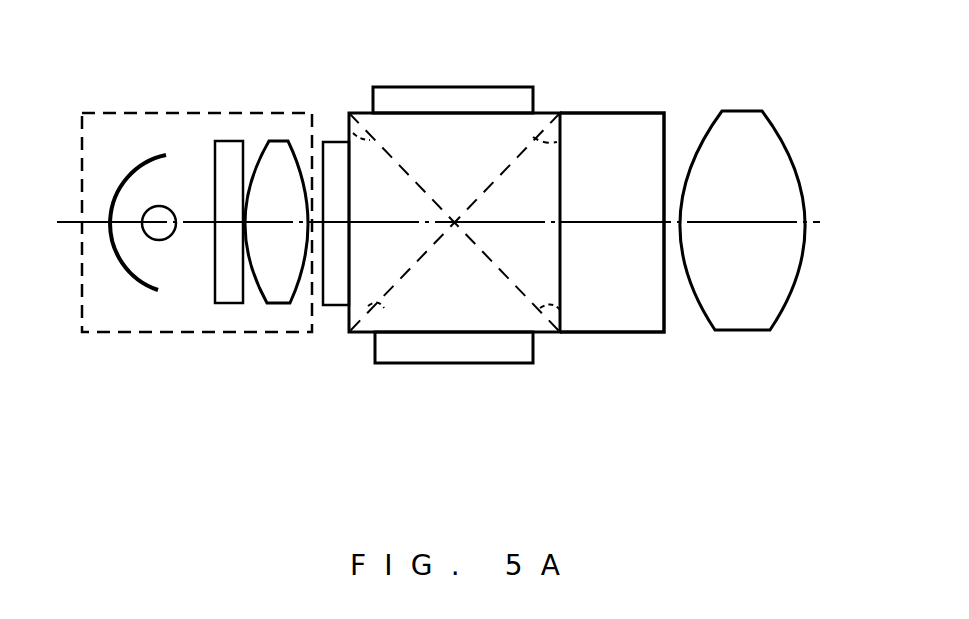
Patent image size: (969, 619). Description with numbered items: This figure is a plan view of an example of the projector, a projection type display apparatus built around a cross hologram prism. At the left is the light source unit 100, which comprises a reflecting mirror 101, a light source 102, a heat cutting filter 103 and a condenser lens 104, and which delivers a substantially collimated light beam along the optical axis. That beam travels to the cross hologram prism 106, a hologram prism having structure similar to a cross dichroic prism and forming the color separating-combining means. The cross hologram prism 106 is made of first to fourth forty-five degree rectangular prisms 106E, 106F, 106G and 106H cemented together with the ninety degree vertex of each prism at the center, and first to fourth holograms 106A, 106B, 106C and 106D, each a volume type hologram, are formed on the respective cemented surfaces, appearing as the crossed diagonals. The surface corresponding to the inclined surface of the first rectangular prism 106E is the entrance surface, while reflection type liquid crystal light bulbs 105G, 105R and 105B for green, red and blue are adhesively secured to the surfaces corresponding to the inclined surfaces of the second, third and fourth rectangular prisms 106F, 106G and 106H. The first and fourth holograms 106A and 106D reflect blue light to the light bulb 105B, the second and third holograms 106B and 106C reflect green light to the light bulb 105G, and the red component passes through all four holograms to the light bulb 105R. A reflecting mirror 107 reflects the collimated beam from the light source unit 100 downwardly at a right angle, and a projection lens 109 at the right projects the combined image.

The light source unit 100 is at (113, 110).
The reflecting mirror 101 is at (142, 285).
The light source 102 is at (157, 205).
The heat cutting filter 103 is at (230, 303).
The condenser lens 104 is at (277, 160).
The second reflection type liquid crystal light bulb 105R is at (337, 288).
The first reflection type liquid crystal light bulb 105G is at (413, 97).
The third reflection type liquid crystal light bulb 105B is at (503, 350).
The cross hologram prism 106 is at (559, 107).
The first hologram 106A is at (566, 138).
The second hologram 106B is at (357, 137).
The third hologram 106C is at (547, 308).
The fourth hologram 106D is at (372, 303).
The first 45° rectangular prism 106E is at (552, 272).
The second 45° rectangular prism 106F is at (490, 140).
The third 45° rectangular prism 106G is at (363, 307).
The fourth 45° rectangular prism 106H is at (548, 316).
The reflecting mirror 107 is at (640, 137).
The projection lens 109 is at (753, 123).